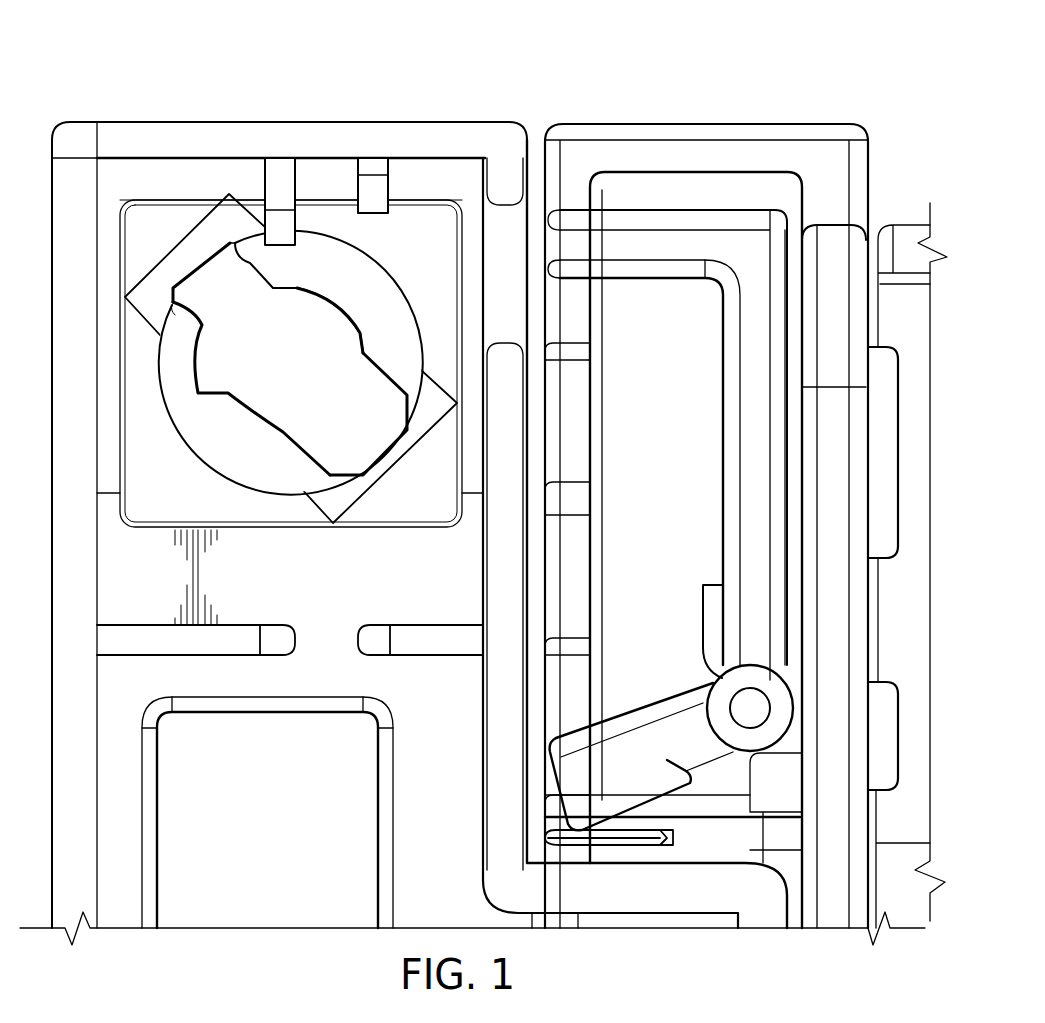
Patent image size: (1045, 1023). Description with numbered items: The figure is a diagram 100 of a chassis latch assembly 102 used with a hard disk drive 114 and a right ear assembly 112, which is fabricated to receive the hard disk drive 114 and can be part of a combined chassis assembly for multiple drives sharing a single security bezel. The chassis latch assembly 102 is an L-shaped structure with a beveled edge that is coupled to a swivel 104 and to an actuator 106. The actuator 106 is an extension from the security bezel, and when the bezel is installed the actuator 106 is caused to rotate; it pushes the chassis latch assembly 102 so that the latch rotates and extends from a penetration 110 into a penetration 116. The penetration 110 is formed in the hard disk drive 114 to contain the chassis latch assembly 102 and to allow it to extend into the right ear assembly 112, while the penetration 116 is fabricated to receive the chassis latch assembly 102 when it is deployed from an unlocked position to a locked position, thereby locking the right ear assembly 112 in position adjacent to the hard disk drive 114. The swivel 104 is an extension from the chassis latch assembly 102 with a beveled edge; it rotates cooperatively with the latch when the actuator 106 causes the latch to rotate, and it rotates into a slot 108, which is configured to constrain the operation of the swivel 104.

The diagram 100 is at (814, 63).
The chassis latch assembly 102 is at (752, 420).
The swivel 104 is at (675, 735).
The actuator 106 is at (795, 588).
The slot 108 is at (630, 842).
The penetration 110 is at (545, 212).
The right ear assembly 112 is at (302, 122).
The hard disk drive 114 is at (703, 122).
The penetration 116 is at (508, 298).